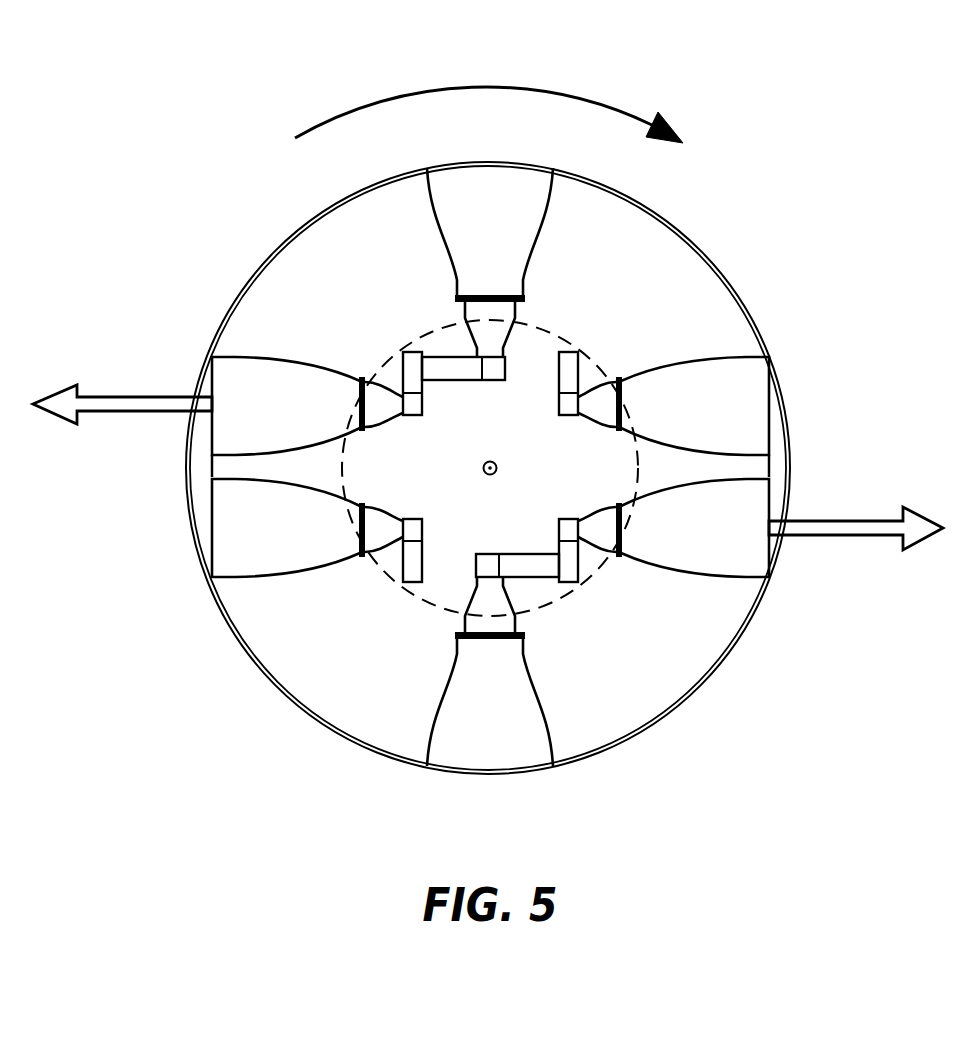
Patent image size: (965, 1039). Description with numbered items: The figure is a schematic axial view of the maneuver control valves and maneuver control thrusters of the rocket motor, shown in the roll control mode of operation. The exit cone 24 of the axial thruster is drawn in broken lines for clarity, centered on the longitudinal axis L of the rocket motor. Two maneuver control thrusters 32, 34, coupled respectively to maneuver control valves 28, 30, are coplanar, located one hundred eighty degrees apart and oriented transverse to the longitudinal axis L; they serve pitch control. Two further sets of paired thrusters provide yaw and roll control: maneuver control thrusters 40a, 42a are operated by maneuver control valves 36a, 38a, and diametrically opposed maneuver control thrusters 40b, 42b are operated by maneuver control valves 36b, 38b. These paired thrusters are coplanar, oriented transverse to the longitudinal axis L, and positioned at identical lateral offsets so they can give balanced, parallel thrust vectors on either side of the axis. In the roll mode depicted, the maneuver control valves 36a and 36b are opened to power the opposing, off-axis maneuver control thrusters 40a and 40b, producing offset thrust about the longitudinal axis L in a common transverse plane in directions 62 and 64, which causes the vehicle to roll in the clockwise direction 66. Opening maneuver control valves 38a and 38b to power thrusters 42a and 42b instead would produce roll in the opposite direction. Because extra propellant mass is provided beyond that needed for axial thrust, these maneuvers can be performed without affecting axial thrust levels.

The exit cone 24 is at (597, 612).
The maneuver control valve 28 is at (488, 367).
The maneuver control valve 30 is at (477, 570).
The maneuver control thruster 32 is at (548, 220).
The maneuver control thruster 34 is at (553, 727).
The maneuver control valve 36a is at (570, 528).
The maneuver control valve 36b is at (415, 405).
The maneuver control valve 38a is at (570, 405).
The maneuver control valve 38b is at (418, 528).
The maneuver control thruster 40a is at (733, 583).
The maneuver control thruster 40b is at (248, 355).
The maneuver control thruster 42a is at (730, 357).
The maneuver control thruster 42b is at (242, 578).
The direction 62 is at (105, 390).
The direction 64 is at (865, 535).
The clockwise direction 66 is at (480, 82).
The longitudinal axis L is at (483, 470).